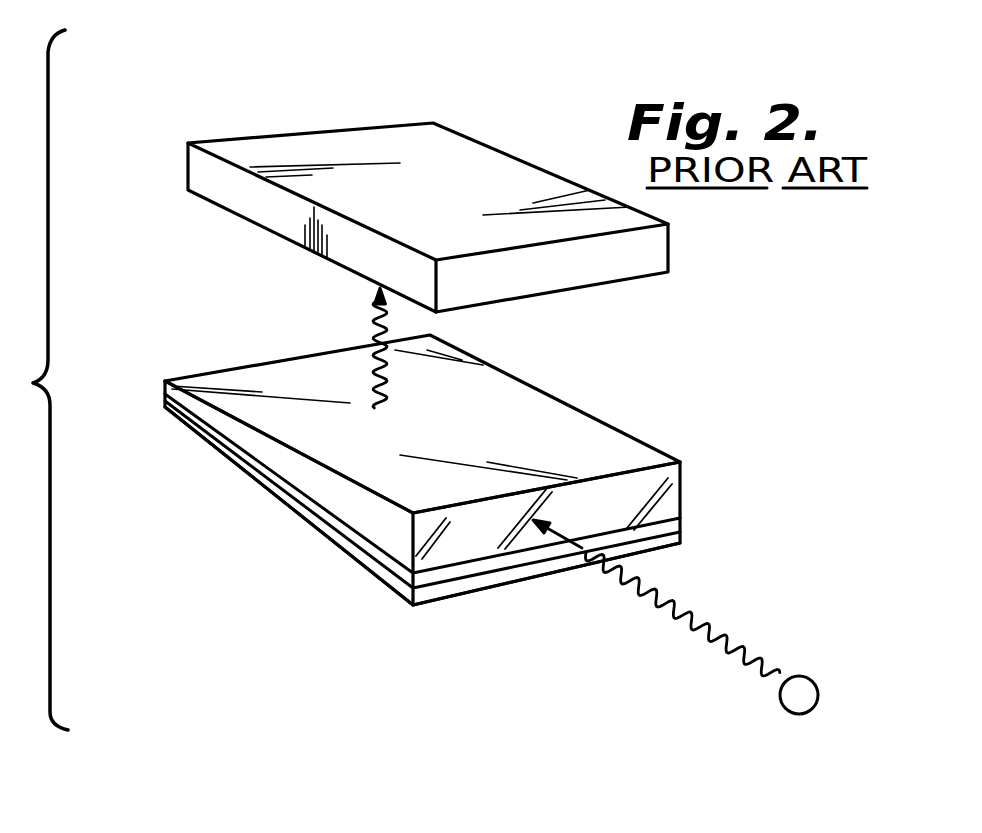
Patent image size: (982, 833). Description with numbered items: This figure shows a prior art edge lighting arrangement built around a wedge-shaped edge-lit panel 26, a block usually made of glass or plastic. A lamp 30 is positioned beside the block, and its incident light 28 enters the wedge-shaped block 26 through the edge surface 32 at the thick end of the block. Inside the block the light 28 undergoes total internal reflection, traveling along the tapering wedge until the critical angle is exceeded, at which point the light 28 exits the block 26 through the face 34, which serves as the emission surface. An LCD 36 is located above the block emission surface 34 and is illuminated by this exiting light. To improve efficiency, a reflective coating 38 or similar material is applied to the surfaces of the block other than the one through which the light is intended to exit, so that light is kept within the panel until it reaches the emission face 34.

The wedge-shaped edge-lit panel 26 is at (457, 524).
The incident light 28 is at (372, 332).
The lamp 30 is at (826, 682).
The edge surface 32 is at (457, 548).
The face 34 is at (510, 405).
The LCD 36 is at (355, 153).
The reflective coating 38 is at (690, 478).